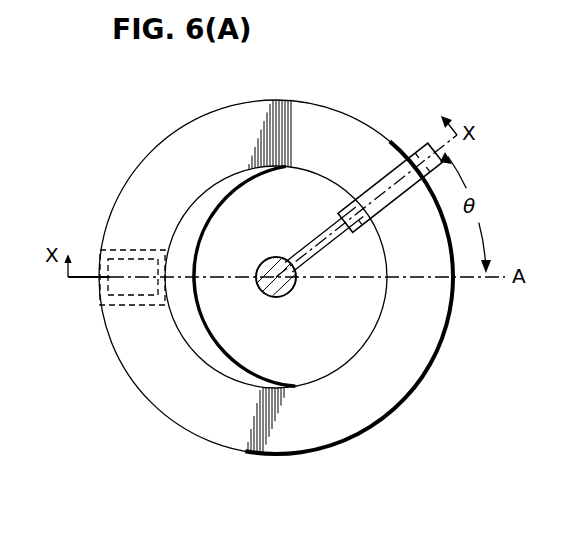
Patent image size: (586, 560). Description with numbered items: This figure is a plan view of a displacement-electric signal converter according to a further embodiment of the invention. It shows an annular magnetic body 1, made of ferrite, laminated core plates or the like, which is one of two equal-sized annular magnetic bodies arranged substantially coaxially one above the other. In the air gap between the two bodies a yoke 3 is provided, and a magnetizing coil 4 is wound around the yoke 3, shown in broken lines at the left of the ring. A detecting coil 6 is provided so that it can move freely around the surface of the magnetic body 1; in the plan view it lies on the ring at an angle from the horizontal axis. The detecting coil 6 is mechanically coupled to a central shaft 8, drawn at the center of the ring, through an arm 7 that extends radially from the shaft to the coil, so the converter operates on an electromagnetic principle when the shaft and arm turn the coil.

The annular magnetic body 1 is at (143, 165).
The yoke 3 is at (122, 292).
The magnetizing coil 4 is at (122, 251).
The detecting coil 6 is at (418, 147).
The arm 7 is at (306, 244).
The central shaft 8 is at (279, 297).